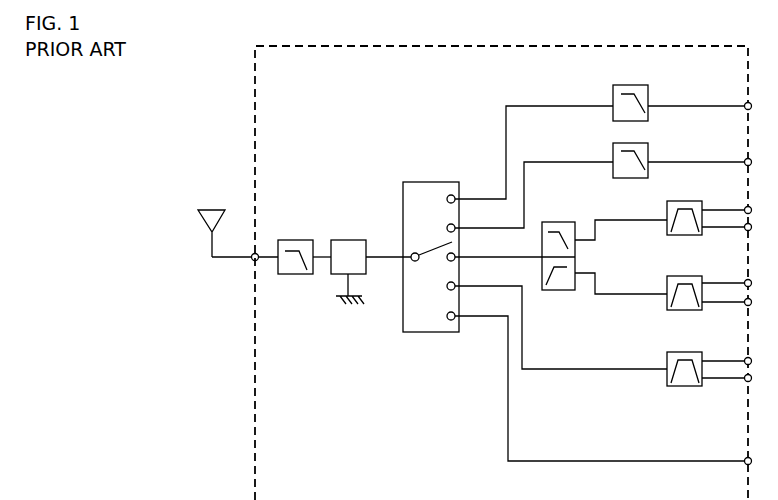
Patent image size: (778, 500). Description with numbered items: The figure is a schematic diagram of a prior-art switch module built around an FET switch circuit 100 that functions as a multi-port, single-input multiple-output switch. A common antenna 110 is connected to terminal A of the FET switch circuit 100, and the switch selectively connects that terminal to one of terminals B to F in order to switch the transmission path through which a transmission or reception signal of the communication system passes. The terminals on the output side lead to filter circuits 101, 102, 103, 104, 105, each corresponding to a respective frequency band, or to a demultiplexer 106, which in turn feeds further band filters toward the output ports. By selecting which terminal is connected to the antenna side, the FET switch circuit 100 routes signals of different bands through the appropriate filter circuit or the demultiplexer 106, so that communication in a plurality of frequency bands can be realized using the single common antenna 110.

The FET switch circuit 100 is at (403, 193).
The filter circuit 101 is at (613, 93).
The filter circuit 102 is at (613, 151).
The filter circuit 103 is at (687, 201).
The filter circuit 104 is at (687, 276).
The filter circuit 105 is at (687, 352).
The demultiplexer 106 is at (566, 222).
The common antenna 110 is at (200, 210).